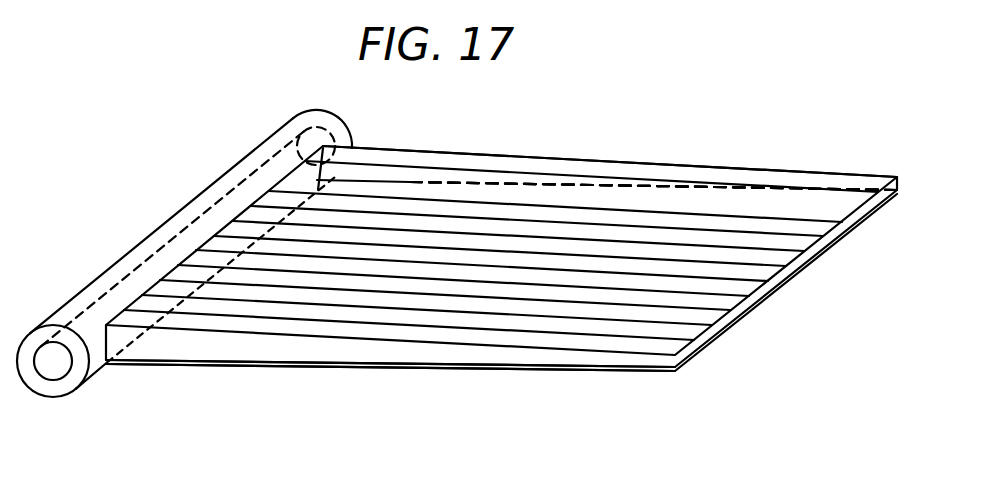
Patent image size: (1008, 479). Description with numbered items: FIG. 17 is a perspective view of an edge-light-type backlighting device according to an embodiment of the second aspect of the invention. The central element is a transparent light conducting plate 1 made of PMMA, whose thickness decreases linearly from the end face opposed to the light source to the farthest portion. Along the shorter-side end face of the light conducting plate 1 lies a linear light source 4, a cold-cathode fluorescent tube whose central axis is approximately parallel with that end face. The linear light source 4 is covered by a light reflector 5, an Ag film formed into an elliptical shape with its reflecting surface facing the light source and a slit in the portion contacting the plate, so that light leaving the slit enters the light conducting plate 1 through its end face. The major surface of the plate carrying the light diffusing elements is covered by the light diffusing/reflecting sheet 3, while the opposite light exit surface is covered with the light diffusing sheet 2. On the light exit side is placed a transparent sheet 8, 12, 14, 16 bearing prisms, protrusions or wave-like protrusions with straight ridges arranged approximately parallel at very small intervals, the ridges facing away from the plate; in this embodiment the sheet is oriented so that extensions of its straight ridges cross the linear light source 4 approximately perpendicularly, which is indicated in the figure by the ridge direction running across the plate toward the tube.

The light conducting plate 1 is at (798, 266).
The light diffusing sheet 2 is at (472, 152).
The light diffusing/reflecting sheet 3 is at (550, 372).
The linear light source 4 is at (53, 377).
The light reflector 5 is at (182, 213).
The transparent sheet 8 is at (580, 178).
The transparent sheet 12 is at (653, 143).
The transparent sheet 14 is at (653, 143).
The transparent sheet 16 is at (653, 143).